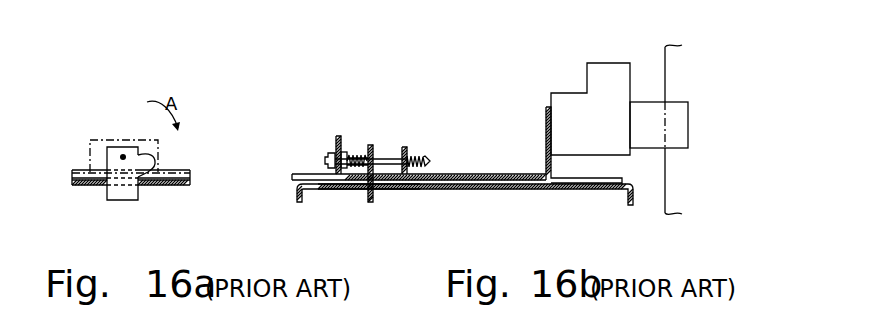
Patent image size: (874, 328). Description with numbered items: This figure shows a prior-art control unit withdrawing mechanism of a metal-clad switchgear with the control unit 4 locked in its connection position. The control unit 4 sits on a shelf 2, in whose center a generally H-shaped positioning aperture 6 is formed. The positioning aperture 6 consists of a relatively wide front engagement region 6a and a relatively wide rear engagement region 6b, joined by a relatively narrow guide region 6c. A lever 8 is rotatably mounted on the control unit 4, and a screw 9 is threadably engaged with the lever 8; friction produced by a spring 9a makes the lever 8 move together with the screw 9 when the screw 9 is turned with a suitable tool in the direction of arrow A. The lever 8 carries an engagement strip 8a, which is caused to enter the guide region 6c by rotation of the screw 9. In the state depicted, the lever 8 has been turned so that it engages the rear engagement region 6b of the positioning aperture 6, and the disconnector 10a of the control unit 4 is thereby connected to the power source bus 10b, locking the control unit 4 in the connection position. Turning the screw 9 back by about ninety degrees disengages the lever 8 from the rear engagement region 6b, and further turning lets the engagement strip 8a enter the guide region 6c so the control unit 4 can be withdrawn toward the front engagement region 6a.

In FIG. 16A, the shelf 2 is at (84, 187).
In FIG. 16B, the shelf 2 is at (483, 183).
In FIG. 16B, the control unit 4 is at (528, 94).
In FIG. 16A, the positioning aperture 6 is at (150, 187).
In FIG. 16B, the positioning aperture 6 is at (333, 194).
In FIG. 16B, the front engagement region 6a is at (315, 192).
In FIG. 16B, the rear engagement region 6b is at (373, 194).
In FIG. 16B, the guide region 6c is at (345, 192).
In FIG. 16A, the lever 8 is at (137, 200).
In FIG. 16B, the lever 8 is at (373, 145).
In FIG. 16A, the engagement strip 8a is at (150, 160).
In FIG. 16A, the screw 9 is at (123, 154).
In FIG. 16B, the screw 9 is at (323, 155).
In FIG. 16B, the spring 9a is at (354, 153).
In FIG. 16B, the disconnector 10a is at (650, 107).
In FIG. 16B, the power source bus 10b is at (665, 193).